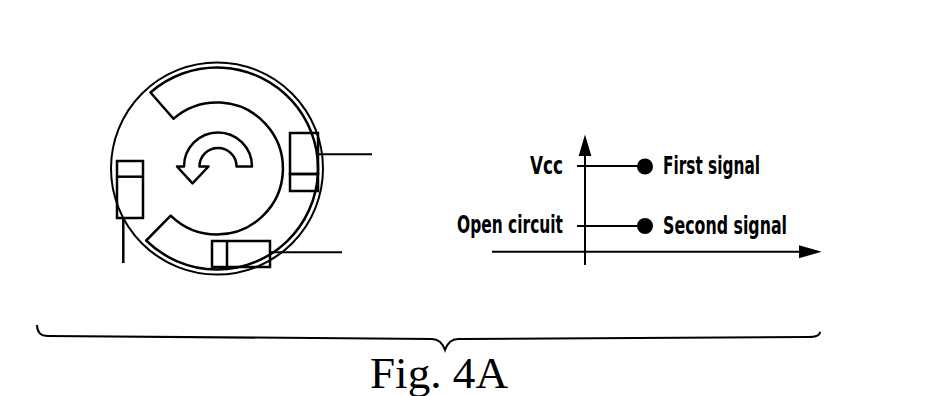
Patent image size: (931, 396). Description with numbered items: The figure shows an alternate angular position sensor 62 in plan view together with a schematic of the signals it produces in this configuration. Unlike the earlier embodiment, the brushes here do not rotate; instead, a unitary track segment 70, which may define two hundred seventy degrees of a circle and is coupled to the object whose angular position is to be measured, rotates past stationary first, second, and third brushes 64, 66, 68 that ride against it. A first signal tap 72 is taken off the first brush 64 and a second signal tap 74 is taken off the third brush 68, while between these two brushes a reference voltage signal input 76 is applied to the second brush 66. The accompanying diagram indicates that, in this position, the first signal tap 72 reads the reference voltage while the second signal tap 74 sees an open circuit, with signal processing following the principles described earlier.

The angular position sensor 62 is at (112, 93).
The track segment 70 is at (253, 82).
The first signal tap 72 is at (350, 153).
The first brush 64 is at (318, 180).
The third brush 68 is at (117, 200).
The second signal tap 74 is at (123, 253).
The second brush 66 is at (257, 267).
The reference voltage signal input 76 is at (320, 253).